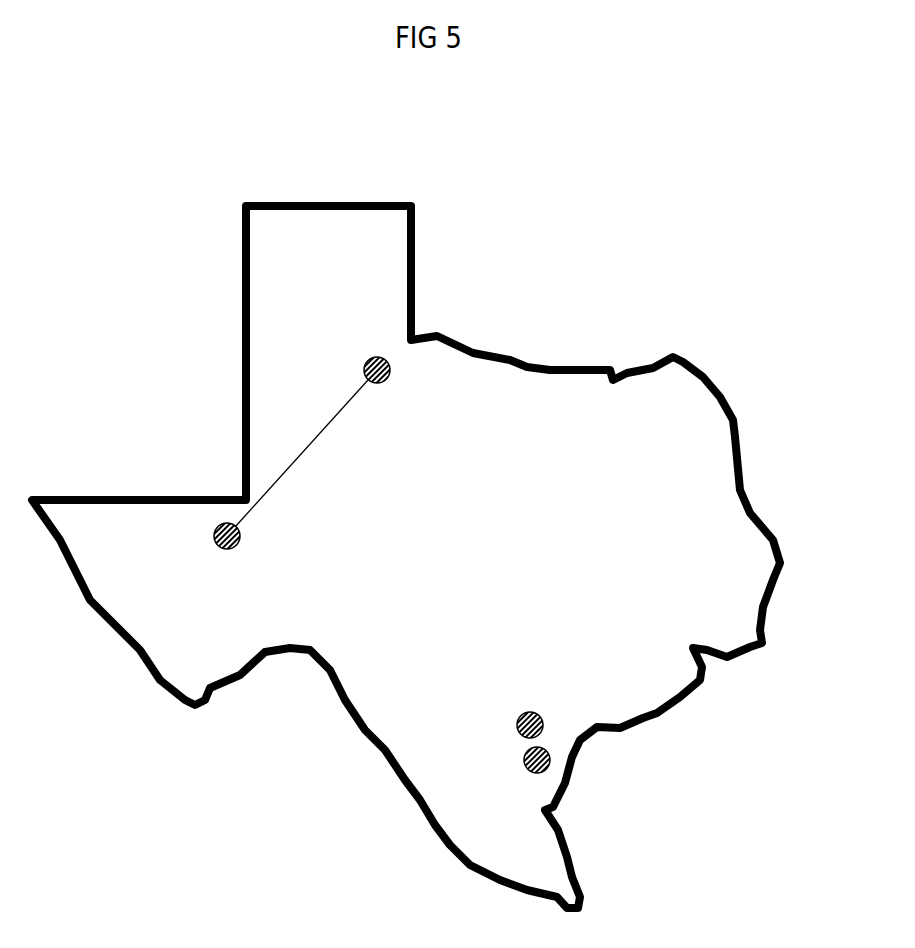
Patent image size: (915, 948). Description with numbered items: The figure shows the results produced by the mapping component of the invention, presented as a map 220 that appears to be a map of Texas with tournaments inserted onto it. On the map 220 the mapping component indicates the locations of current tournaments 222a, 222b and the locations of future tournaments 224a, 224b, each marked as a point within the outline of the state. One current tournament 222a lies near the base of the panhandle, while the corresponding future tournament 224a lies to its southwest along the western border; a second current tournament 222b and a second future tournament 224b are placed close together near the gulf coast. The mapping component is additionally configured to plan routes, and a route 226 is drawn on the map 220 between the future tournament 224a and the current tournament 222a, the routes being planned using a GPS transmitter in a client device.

The map 220 is at (710, 378).
The current tournament 222a is at (389, 363).
The current tournament 222b is at (545, 721).
The future tournament 224a is at (216, 526).
The future tournament 224b is at (552, 760).
The route 226 is at (312, 447).